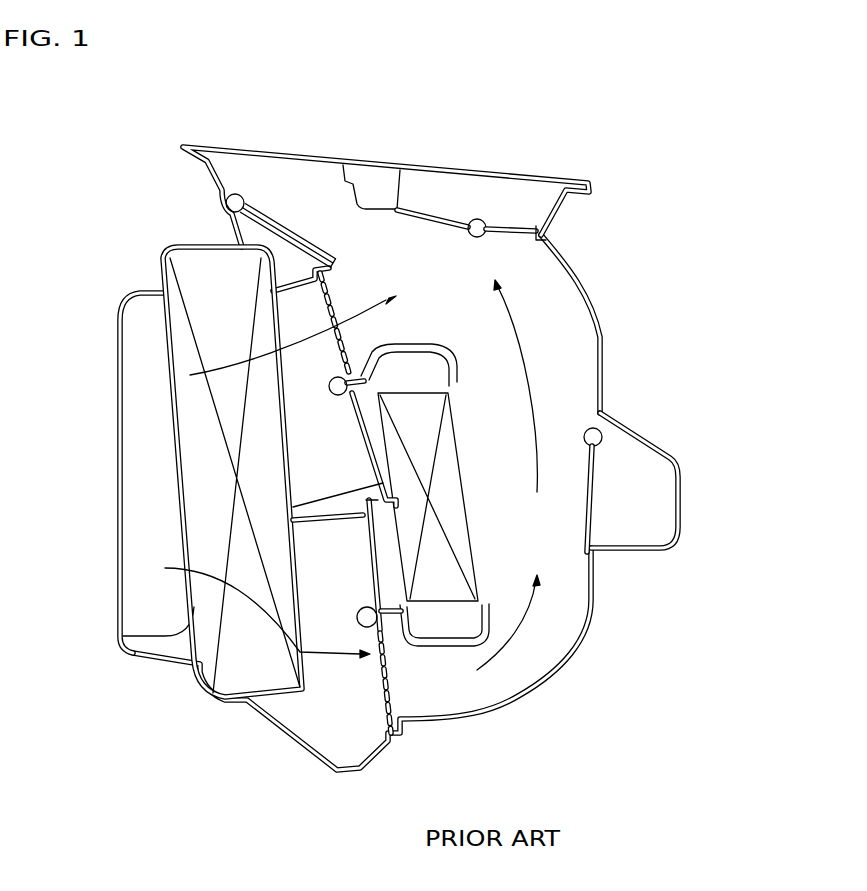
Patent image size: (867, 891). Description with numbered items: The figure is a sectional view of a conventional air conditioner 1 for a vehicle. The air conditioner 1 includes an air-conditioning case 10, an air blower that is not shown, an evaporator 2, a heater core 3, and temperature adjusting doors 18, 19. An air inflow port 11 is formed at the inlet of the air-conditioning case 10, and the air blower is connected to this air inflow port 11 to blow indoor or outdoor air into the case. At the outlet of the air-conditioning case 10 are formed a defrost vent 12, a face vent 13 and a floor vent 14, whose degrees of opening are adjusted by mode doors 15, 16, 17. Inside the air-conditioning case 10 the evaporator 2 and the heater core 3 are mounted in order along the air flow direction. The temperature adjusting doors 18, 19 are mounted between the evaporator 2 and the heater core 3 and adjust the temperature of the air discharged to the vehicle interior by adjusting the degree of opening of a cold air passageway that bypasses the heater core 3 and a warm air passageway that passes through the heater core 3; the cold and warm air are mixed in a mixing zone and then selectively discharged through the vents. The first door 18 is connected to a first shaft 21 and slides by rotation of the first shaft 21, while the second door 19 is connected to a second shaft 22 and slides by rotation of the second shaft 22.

The air conditioner 1 is at (656, 204).
The evaporator 2 is at (205, 488).
The heater core 3 is at (438, 590).
The air-conditioning case 10 is at (593, 290).
The air inflow port 11 is at (148, 600).
The defrost vent 12 is at (285, 173).
The face vent 13 is at (447, 187).
The floor vent 14 is at (640, 487).
The mode door 15 is at (228, 222).
The mode door 16 is at (548, 237).
The mode door 17 is at (597, 507).
The first door 18 is at (352, 428).
The second door 19 is at (372, 561).
The first shaft 21 is at (188, 377).
The second shaft 22 is at (360, 619).